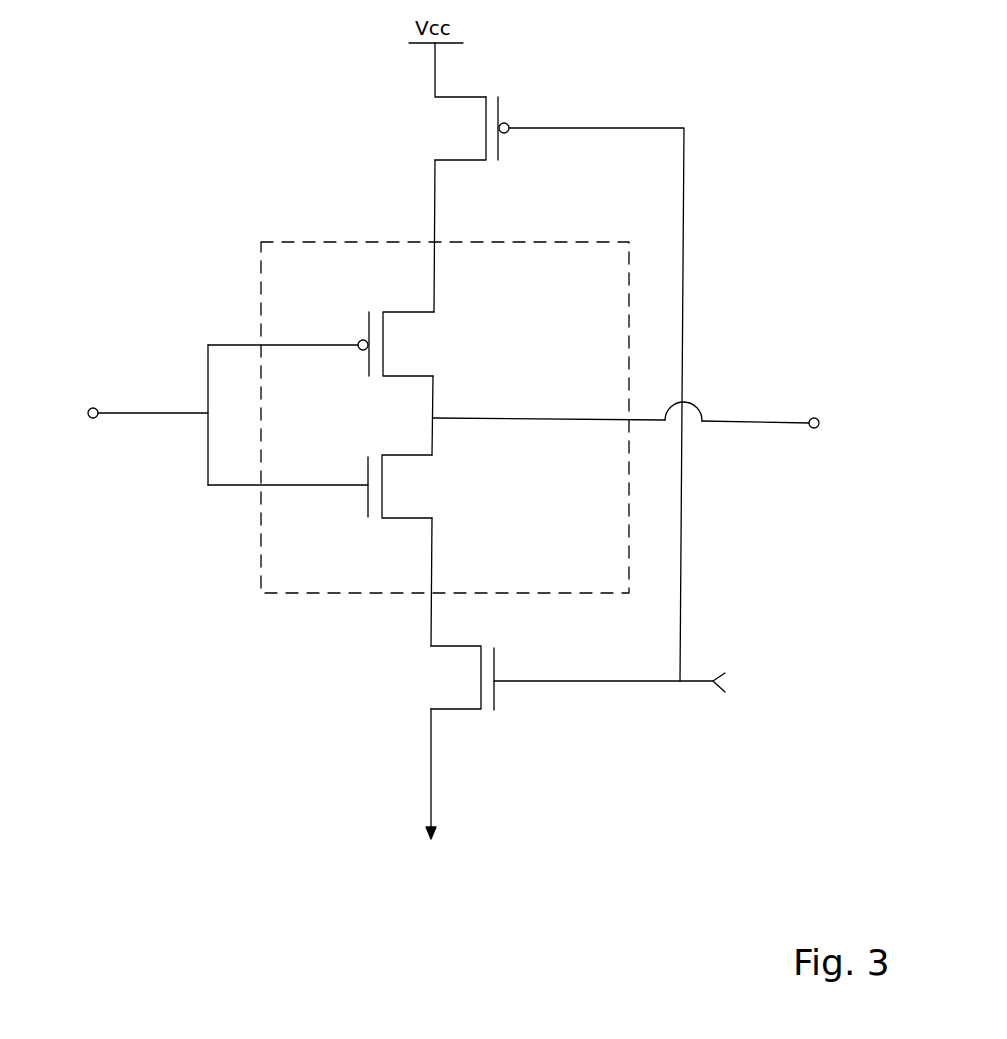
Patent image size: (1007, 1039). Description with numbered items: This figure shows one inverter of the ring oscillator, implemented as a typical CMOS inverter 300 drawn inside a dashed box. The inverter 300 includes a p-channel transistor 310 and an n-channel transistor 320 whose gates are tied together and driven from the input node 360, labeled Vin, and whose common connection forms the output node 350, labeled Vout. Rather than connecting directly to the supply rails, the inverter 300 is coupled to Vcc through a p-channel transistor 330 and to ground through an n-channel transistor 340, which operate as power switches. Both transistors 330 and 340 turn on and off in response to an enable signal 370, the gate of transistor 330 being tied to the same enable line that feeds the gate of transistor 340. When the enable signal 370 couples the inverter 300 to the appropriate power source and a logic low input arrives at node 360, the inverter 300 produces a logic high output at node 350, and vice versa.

The CMOS inverter 300 is at (605, 279).
The p-channel transistor 310 is at (339, 344).
The n-channel transistor 320 is at (336, 486).
The p-channel transistor 330 is at (559, 383).
The n-channel transistor 340 is at (487, 683).
The output node 350 is at (653, 413).
The input node 360 is at (123, 415).
The enable signal 370 is at (650, 692).